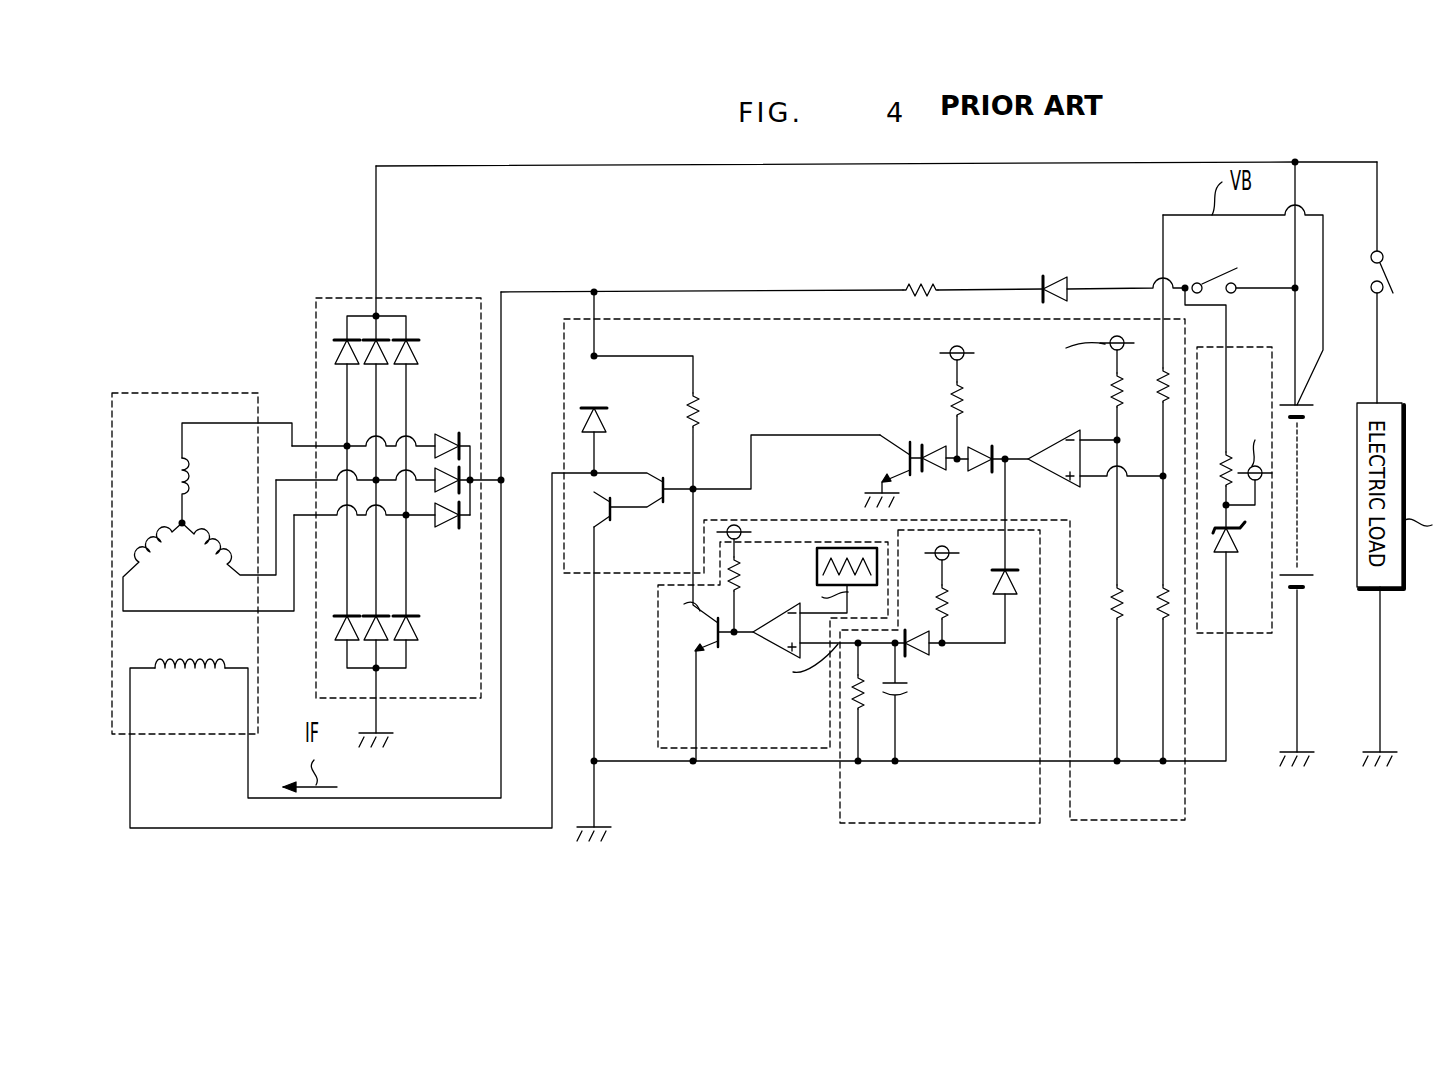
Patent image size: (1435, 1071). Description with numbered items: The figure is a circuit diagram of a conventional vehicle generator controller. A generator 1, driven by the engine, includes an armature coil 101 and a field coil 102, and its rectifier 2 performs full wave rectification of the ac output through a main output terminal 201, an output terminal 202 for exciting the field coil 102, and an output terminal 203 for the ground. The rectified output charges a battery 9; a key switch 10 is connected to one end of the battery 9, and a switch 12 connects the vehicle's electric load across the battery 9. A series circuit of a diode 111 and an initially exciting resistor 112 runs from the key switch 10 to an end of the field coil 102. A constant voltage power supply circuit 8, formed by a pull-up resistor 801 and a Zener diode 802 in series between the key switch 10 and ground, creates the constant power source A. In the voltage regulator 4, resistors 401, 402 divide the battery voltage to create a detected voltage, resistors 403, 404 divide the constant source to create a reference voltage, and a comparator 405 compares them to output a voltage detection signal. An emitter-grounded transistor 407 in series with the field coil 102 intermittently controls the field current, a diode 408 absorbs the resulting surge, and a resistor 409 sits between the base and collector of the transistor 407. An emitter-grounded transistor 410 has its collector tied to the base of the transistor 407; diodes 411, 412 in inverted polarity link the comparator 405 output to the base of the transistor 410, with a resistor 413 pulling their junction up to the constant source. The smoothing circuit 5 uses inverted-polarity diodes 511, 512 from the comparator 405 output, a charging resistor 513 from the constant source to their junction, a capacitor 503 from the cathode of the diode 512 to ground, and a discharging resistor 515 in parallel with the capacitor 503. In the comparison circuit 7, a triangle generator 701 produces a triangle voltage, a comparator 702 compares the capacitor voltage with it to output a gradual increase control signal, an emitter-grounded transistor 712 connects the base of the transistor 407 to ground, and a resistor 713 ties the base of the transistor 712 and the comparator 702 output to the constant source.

The generator 1 is at (180, 393).
The armature coil 101 is at (182, 476).
The field coil 102 is at (204, 685).
The rectifier 2 is at (426, 298).
The output terminal 201 is at (404, 320).
The output terminal 202 is at (480, 512).
The output terminal 203 is at (408, 650).
The voltage regulator 4 is at (564, 362).
The transistor 407 is at (650, 525).
The diode 408 is at (626, 412).
The resistor 409 is at (701, 412).
The transistor 410 is at (879, 432).
The diode 411 is at (982, 446).
The diode 412 is at (924, 445).
The resistor 413 is at (968, 395).
The resistor 403 is at (1108, 380).
The resistor 401 is at (1151, 383).
The resistor 402 is at (1148, 580).
The resistor 404 is at (1101, 602).
The comparator 405 is at (1025, 447).
The comparison circuit 7 is at (658, 720).
The triangle generator 701 is at (837, 548).
The comparator 702 is at (756, 625).
The transistor 712 is at (705, 648).
The resistor 713 is at (748, 562).
The smoothing circuit 5 is at (1010, 825).
The capacitor 503 is at (907, 692).
The diode 511 is at (1015, 607).
The diode 512 is at (933, 645).
The charging resistor 513 is at (947, 607).
The discharging resistor 515 is at (853, 707).
The constant voltage power supply circuit 8 is at (1252, 642).
The pull-up resistor 801 is at (1234, 448).
The Zener diode 802 is at (1233, 538).
The battery 9 is at (1311, 466).
The key switch 10 is at (1214, 272).
The switch 12 is at (1367, 277).
The diode 111 is at (1055, 280).
The initially exciting resistor 112 is at (932, 287).